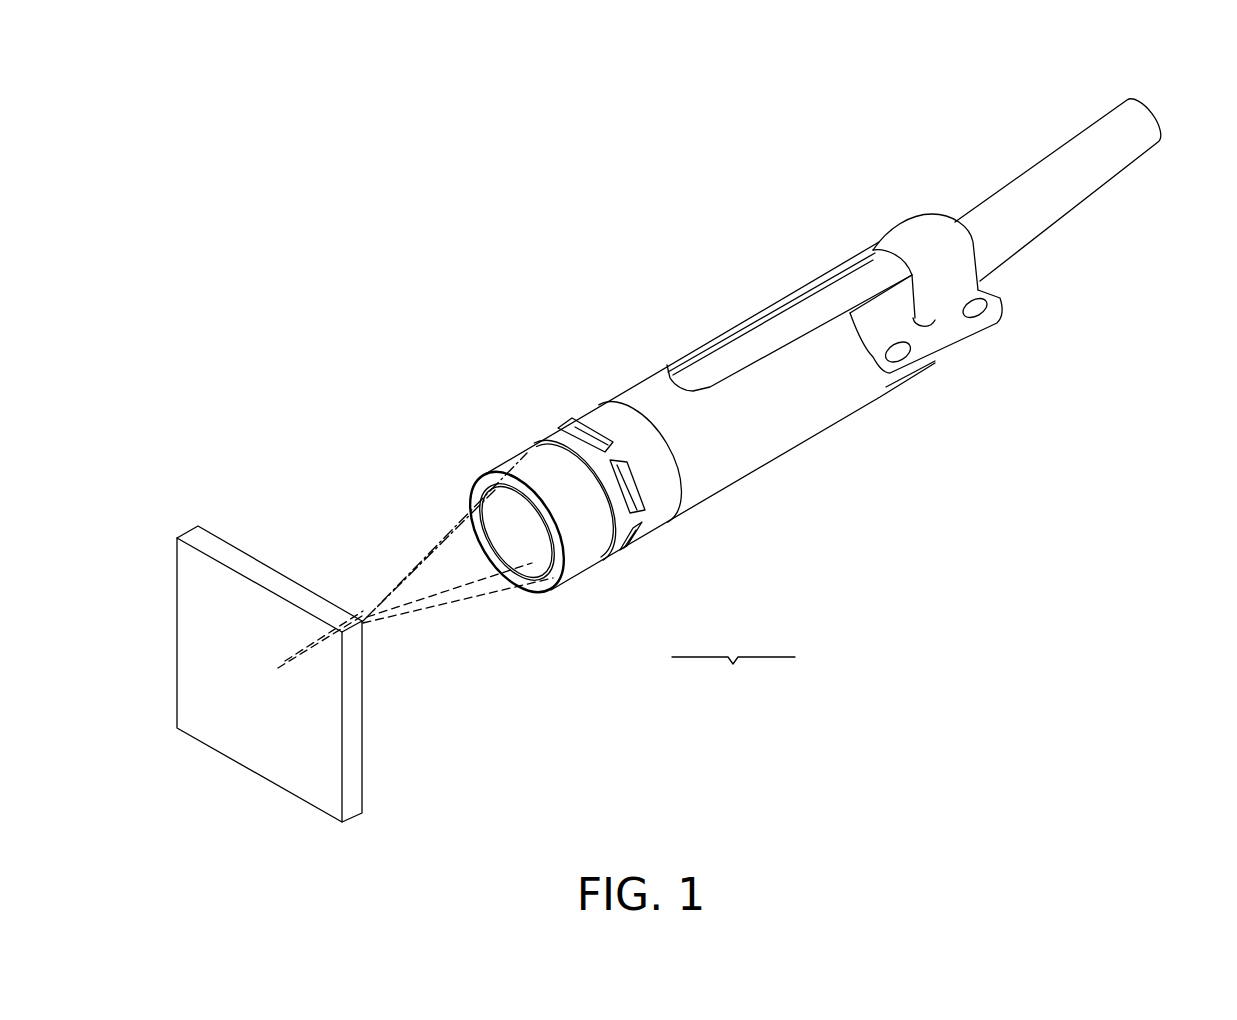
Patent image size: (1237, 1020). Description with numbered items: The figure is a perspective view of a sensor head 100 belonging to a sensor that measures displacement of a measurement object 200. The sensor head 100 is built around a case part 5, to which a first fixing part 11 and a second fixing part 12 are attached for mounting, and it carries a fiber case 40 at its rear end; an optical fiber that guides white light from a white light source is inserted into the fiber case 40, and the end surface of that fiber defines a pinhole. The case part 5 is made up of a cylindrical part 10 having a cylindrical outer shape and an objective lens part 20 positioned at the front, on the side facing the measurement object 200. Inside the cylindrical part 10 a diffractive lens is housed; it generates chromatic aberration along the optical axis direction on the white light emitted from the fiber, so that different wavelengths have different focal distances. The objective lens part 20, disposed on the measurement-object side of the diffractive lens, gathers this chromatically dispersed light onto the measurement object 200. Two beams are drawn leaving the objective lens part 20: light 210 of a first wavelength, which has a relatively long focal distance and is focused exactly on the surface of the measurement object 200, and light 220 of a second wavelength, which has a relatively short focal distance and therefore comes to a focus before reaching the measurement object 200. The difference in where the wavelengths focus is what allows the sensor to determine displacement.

The sensor head 100 is at (806, 392).
The case part 5 is at (693, 470).
The cylindrical part 10 is at (740, 490).
The first fixing part 11 is at (955, 343).
The second fixing part 12 is at (843, 258).
The objective lens part 20 is at (662, 540).
The fiber case 40 is at (1012, 180).
The measurement object 200 is at (253, 555).
The light of a first wavelength 210 is at (367, 600).
The light of a second wavelength 220 is at (455, 590).